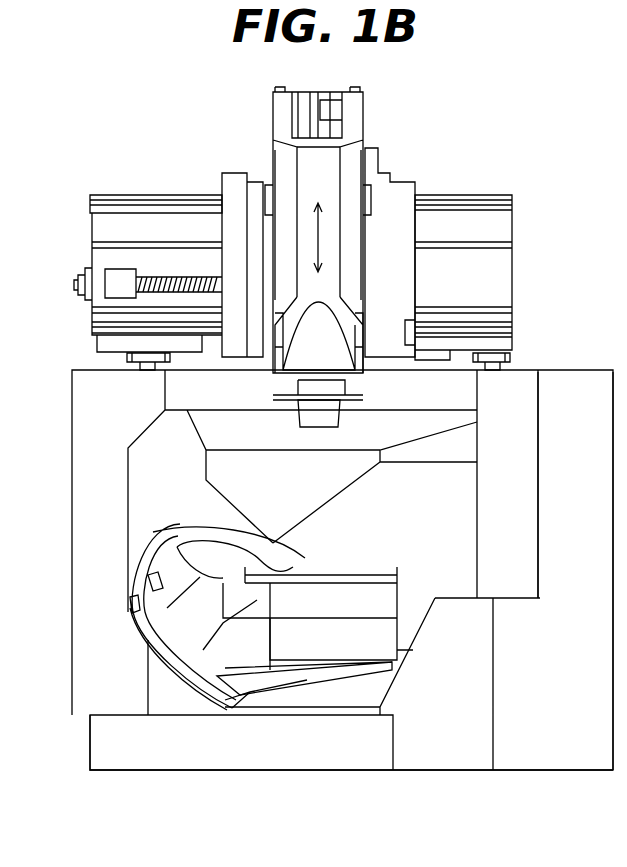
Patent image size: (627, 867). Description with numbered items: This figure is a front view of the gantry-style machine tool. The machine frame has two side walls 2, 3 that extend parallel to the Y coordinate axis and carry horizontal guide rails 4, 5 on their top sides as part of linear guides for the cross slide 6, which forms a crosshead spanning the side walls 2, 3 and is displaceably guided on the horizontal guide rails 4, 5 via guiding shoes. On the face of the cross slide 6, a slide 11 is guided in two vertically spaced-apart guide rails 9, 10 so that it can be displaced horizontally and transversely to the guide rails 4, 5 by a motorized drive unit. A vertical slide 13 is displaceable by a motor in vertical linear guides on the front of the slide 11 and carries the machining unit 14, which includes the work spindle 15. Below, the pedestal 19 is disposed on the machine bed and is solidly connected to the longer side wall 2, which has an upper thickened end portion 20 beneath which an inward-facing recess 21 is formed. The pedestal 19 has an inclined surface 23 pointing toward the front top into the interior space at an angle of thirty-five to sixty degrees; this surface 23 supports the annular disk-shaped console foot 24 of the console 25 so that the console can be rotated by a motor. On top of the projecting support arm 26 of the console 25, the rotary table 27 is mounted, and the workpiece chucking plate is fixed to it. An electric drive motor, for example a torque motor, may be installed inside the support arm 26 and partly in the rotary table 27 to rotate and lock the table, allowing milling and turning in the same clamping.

The side wall 2 is at (97, 452).
The side wall 3 is at (563, 395).
The horizontal guide rail 4 is at (127, 365).
The horizontal guide rail 5 is at (318, 510).
The cross slide 6 is at (502, 263).
The guide rail 9 is at (92, 330).
The guide rail 10 is at (135, 205).
The slide 11 is at (400, 225).
The vertical slide 13 is at (355, 145).
The machining unit 14 is at (332, 357).
The work spindle 15 is at (313, 415).
The pedestal 19 is at (197, 700).
The upper thickened end portion 20 is at (121, 425).
The recess 21 is at (150, 450).
The inclined surface 23 is at (153, 637).
The console foot 24 is at (150, 603).
The console 25 is at (209, 624).
The support arm 26 is at (324, 652).
The rotary table 27 is at (324, 612).